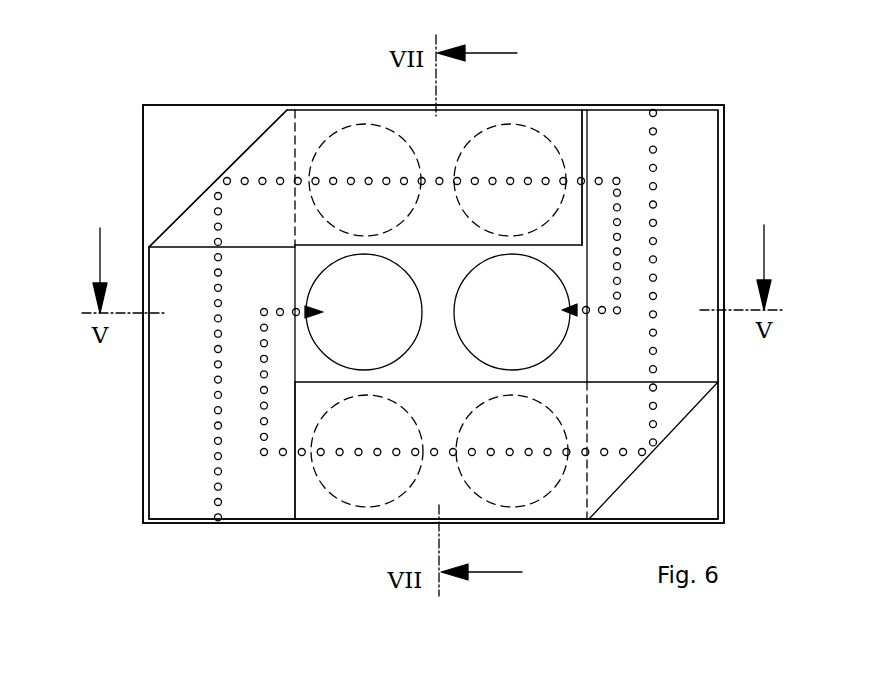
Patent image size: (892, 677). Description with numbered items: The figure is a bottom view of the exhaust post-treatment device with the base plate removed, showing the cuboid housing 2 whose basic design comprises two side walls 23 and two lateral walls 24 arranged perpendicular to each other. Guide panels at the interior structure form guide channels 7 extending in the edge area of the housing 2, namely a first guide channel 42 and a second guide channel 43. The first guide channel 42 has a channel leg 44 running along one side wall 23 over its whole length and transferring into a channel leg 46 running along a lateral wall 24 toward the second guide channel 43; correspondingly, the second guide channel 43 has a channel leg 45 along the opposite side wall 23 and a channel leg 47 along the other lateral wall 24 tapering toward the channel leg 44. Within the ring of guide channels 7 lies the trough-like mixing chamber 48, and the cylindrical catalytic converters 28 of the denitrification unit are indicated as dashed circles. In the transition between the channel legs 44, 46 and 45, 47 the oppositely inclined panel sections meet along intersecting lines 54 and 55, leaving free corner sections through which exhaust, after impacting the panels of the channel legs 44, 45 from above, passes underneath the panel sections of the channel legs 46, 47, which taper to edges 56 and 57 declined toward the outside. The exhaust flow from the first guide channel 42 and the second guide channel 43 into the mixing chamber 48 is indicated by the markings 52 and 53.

The housing 2 is at (634, 88).
The guide channels 7 is at (185, 132).
The side walls 23 is at (130, 184).
The lateral walls 24 is at (526, 93).
The cylindrical catalytic converters 28 is at (349, 160).
The first guide channel 42 is at (184, 459).
The second guide channel 43 is at (698, 174).
The channel leg 44 is at (165, 376).
The channel leg 45 is at (705, 352).
The channel leg 46 is at (405, 120).
The channel leg 47 is at (463, 515).
The mixing chamber 48 is at (424, 277).
The marking 52 is at (215, 270).
The marking 53 is at (656, 258).
The intersecting line 54 is at (237, 158).
The intersecting line 55 is at (668, 438).
The edge 56 is at (298, 494).
The edge 57 is at (582, 143).